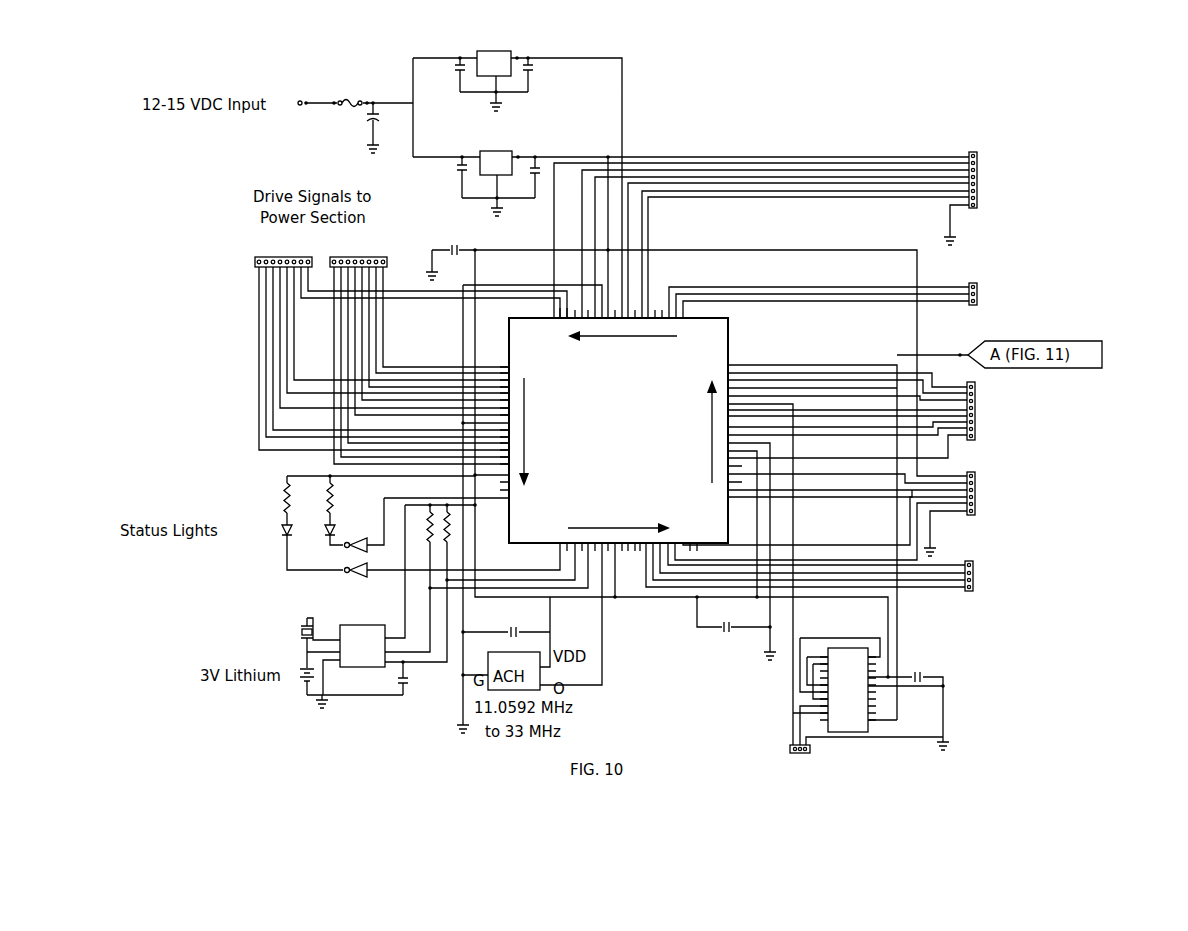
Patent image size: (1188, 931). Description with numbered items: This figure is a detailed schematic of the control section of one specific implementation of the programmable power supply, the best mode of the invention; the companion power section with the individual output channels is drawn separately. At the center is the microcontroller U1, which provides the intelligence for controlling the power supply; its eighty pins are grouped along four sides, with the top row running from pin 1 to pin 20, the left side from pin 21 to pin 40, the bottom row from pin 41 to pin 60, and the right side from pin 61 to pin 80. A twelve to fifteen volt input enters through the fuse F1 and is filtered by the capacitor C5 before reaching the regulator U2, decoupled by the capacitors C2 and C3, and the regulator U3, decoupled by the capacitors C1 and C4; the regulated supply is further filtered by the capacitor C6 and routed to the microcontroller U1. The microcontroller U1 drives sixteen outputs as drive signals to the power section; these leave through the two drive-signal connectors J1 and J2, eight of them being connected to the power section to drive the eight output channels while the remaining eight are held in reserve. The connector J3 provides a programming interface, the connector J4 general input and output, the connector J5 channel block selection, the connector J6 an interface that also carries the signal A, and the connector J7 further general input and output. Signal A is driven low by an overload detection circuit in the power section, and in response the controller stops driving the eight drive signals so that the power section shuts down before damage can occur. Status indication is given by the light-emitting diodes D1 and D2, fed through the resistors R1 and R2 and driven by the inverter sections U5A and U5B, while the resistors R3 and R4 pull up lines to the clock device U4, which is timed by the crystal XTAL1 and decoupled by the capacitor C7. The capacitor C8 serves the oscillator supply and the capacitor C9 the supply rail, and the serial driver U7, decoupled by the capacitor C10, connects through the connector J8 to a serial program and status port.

The fuse 640 mA F1 is at (349, 80).
The capacitor 1 uF C5 is at (352, 131).
The voltage regulator 7833 U2 is at (517, 174).
The capacitor .33 uF C2 is at (448, 84).
The capacitor .1 uF C3 is at (552, 83).
The voltage regulator 7805 U3 is at (691, 173).
The capacitor .33 uF C1 is at (435, 183).
The capacitor .1 uF C4 is at (552, 183).
The capacitor 1 uF C6 is at (688, 351).
The drive signal connector J1 is at (411, 342).
The drive signal connector J2 is at (420, 349).
The JTAG interface connector J3 is at (1018, 188).
The general I/O connector J4 is at (1016, 286).
The microcontroller U1 is at (668, 454).
The channel block select connector J5 is at (1024, 401).
The C.O.S. interface connector J6 is at (1011, 504).
The general I/O external interface connector J7 is at (1052, 568).
The resistor 220 R1 is at (270, 500).
The resistor 220 R2 is at (347, 500).
The status LED D1 is at (299, 547).
The status LED D2 is at (321, 540).
The 7404 inverter U5A is at (365, 525).
The 7404 inverter U5B is at (329, 579).
The resistor 10K R3 is at (409, 578).
The resistor 10K R4 is at (434, 583).
The real time clock DS1307 U4 is at (355, 653).
The crystal 32.768 KHz XTAL1 is at (252, 630).
The capacitor .1 uF C7 is at (422, 684).
The capacitor .1 uF C8 is at (506, 621).
The capacitor .1 uF C9 is at (728, 628).
The serial driver MAX233A U7 is at (871, 696).
The capacitor .1 uF C10 is at (930, 692).
The serial out 2 program/status port J8 is at (790, 769).
The U1 pin 1 is at (685, 338).
The U1 pin 20 is at (611, 338).
The U1 pin 21 is at (522, 421).
The U1 pin 40 is at (522, 498).
The U1 pin 41 is at (607, 528).
The U1 pin 60 is at (682, 528).
The U1 pin 61 is at (709, 497).
The U1 pin 80 is at (709, 420).